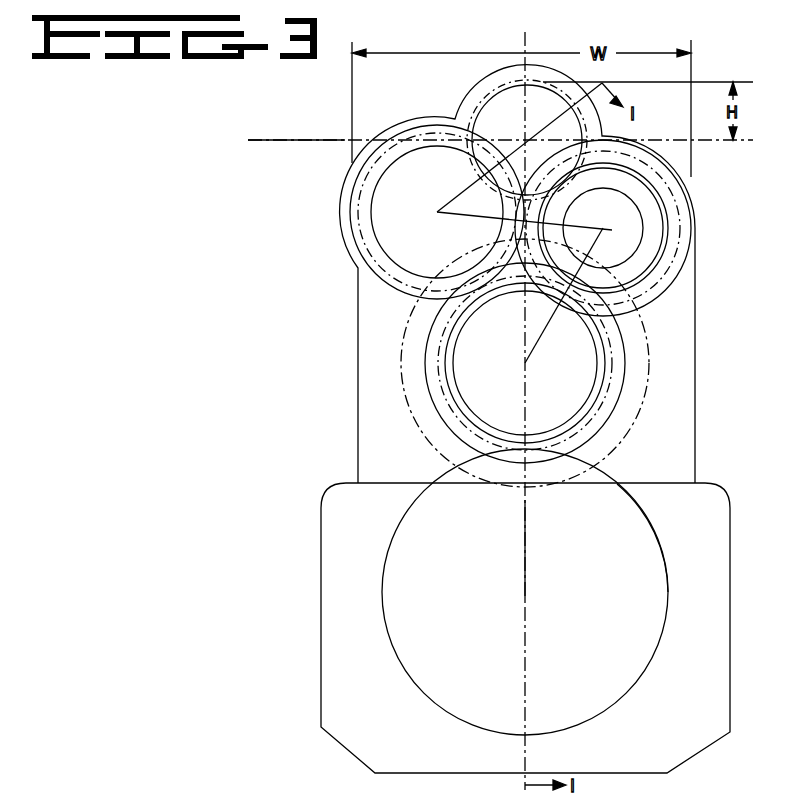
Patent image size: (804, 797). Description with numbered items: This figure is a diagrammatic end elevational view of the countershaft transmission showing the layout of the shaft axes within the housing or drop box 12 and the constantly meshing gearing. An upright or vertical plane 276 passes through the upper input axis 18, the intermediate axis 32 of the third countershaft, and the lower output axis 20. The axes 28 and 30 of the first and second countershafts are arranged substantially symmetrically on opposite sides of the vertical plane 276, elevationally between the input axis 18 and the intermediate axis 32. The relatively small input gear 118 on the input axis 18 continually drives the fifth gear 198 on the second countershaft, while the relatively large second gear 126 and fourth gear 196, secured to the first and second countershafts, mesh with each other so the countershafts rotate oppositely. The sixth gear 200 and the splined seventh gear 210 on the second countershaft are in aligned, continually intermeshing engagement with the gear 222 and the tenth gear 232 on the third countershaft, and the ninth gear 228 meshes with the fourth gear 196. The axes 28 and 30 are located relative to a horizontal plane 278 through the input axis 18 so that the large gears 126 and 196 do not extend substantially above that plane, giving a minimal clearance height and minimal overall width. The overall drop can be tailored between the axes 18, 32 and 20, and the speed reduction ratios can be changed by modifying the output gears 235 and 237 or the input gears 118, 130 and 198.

The housing or drop box 12 is at (321, 555).
The input axis 18 is at (527, 140).
The output axis 20 is at (525, 592).
The axis of first countershaft 28 is at (437, 212).
The axis of second countershaft 30 is at (603, 228).
The axis of third countershaft 32 is at (525, 363).
The input gear 118 is at (553, 85).
The second gear 126 is at (350, 172).
The input gear 130 is at (358, 238).
The fourth gear 196 is at (673, 170).
The fifth gear 198 is at (662, 214).
The sixth gear 200 is at (668, 240).
The seventh gear 210 is at (670, 293).
The gear 222 is at (630, 352).
The ninth gear 228 is at (600, 420).
The tenth gear 232 is at (650, 335).
The output gear 235 is at (622, 396).
The output gear 237 is at (668, 550).
The upright or vertical plane 276 is at (525, 543).
The horizontal plane 278 is at (312, 140).